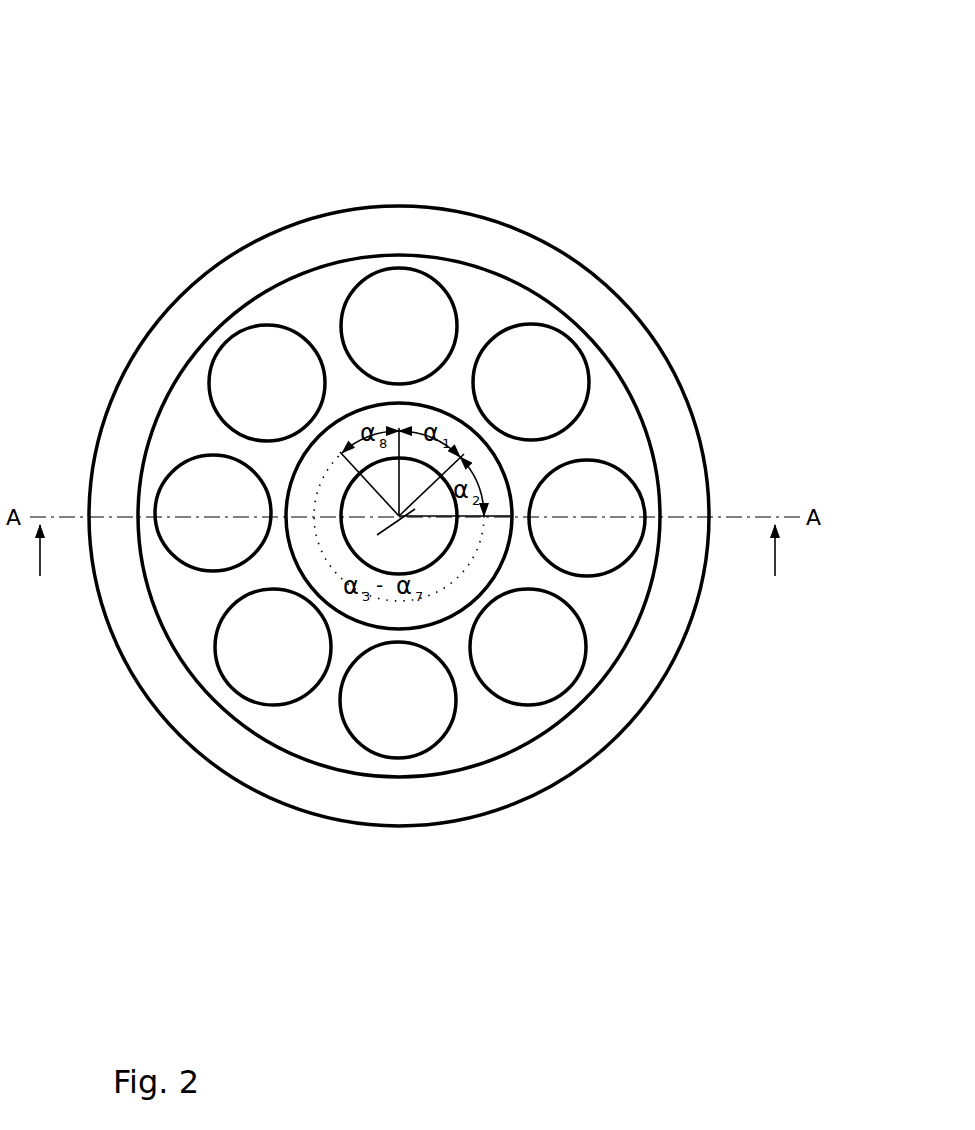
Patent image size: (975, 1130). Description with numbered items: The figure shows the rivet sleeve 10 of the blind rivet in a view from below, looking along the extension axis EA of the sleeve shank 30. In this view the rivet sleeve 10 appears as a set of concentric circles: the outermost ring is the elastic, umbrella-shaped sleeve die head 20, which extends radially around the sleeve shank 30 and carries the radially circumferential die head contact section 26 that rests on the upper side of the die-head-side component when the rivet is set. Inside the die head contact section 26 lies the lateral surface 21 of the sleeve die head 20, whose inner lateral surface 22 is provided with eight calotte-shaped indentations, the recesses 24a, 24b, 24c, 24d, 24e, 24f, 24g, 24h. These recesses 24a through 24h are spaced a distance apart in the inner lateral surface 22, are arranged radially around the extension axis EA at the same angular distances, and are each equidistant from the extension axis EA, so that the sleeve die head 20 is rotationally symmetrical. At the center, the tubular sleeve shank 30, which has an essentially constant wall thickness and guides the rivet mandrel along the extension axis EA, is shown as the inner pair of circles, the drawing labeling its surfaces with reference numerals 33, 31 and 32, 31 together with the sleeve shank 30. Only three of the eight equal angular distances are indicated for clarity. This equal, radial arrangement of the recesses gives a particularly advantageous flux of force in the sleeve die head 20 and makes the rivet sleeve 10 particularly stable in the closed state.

The rivet sleeve 10 is at (150, 84).
The sleeve die head 20 is at (724, 270).
The lateral surface 21 is at (481, 294).
The inner lateral surface 22 is at (399, 426).
The die head contact section 26 is at (521, 254).
The recess 24a is at (399, 326).
The recess 24b is at (531, 382).
The recess 24c is at (587, 518).
The recess 24d is at (528, 647).
The recess 24e is at (398, 700).
The recess 24f is at (273, 647).
The recess 24g is at (213, 513).
The recess 24h is at (267, 383).
The sleeve shank 30 is at (396, 637).
The hub ring 31 is at (396, 637).
The inner hub surface 32 is at (423, 574).
The outer hub surface 33 is at (366, 628).
The extension axis EA is at (396, 531).